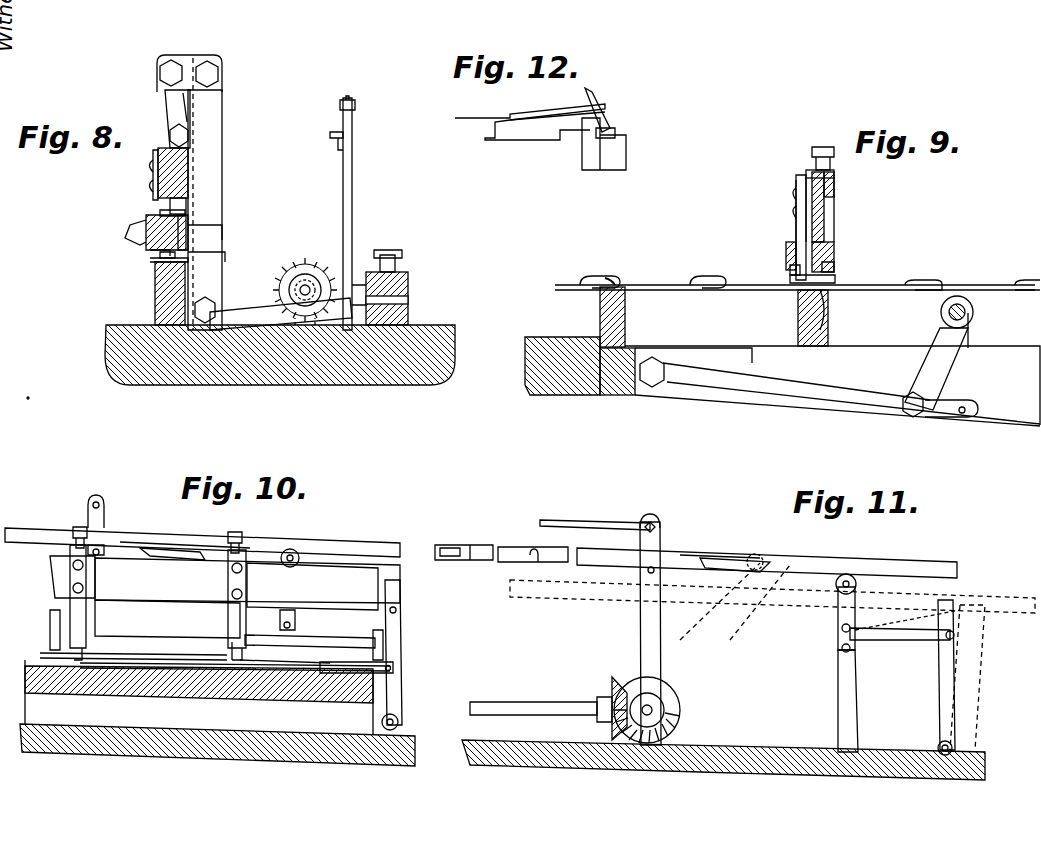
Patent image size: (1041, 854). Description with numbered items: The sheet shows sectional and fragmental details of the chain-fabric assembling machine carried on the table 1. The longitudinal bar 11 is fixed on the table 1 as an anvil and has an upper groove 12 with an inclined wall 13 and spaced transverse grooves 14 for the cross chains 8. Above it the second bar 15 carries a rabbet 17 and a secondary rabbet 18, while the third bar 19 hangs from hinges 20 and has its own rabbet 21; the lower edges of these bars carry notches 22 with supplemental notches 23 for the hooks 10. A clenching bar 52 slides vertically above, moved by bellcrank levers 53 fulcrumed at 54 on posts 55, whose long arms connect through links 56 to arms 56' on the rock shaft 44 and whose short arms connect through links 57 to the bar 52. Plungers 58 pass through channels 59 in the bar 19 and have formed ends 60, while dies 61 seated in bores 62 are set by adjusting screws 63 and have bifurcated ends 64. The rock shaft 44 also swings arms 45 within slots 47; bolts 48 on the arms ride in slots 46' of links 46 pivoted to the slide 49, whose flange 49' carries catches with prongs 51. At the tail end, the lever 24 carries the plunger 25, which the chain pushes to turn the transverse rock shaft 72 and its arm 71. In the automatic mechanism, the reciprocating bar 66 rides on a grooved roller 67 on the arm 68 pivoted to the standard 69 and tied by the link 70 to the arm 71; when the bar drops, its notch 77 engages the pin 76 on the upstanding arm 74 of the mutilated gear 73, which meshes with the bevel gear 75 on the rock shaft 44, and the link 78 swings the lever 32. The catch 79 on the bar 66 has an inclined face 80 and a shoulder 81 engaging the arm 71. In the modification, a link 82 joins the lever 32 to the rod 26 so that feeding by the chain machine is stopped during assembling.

In FIG. 8, the table 1 is at (445, 378).
In FIG. 9, the table 1 is at (600, 398).
In FIG. 10, the table 1 is at (408, 762).
In FIG. 11, the table 1 is at (528, 742).
In FIG. 9, the cross chains 8 is at (640, 282).
In FIG. 9, the hooks 10 is at (960, 262).
In FIG. 8, the longitudinal bar 11 is at (155, 300).
In FIG. 9, the longitudinal bar 11 is at (798, 320).
In FIG. 10, the longitudinal bar 11 is at (30, 707).
In FIG. 8, the longitudinal groove 12 is at (150, 260).
In FIG. 10, the longitudinal groove 12 is at (130, 675).
In FIG. 8, the inclined side wall 13 is at (160, 255).
In FIG. 9, the transverse grooves 14 is at (830, 300).
In FIG. 8, the second longitudinal bar 15 is at (186, 228).
In FIG. 9, the second longitudinal bar 15 is at (832, 252).
In FIG. 10, the second longitudinal bar 15 is at (375, 640).
In FIG. 8, the longitudinal rabbet 17 is at (195, 258).
In FIG. 10, the longitudinal rabbet 17 is at (298, 663).
In FIG. 8, the secondary longitudinal rabbet 18 is at (190, 242).
In FIG. 10, the secondary longitudinal rabbet 18 is at (260, 665).
In FIG. 8, the third bar 19 is at (150, 230).
In FIG. 9, the third bar 19 is at (790, 240).
In FIG. 8, the hinges 20 is at (162, 212).
In FIG. 8, the longitudinal rabbet 21 is at (150, 250).
In FIG. 9, the notches 22 is at (785, 282).
In FIG. 10, the notches 22 is at (238, 640).
In FIG. 10, the supplemental notches 23 is at (232, 640).
In FIG. 10, the lever 24 is at (395, 658).
In FIG. 10, the plunger 25 is at (385, 640).
In FIG. 12, the link or rod 26 is at (470, 125).
In FIG. 12, the lever 32 is at (622, 125).
In FIG. 8, the rock shaft 44 is at (305, 285).
In FIG. 9, the rock shaft 44 is at (973, 310).
In FIG. 11, the rock shaft 44 is at (500, 702).
In FIG. 9, the arms 45 is at (943, 372).
In FIG. 9, the links 46 is at (782, 399).
In FIG. 9, the slots 46' is at (957, 426).
In FIG. 9, the transverse slots 47 is at (812, 412).
In FIG. 9, the bolts 48 is at (913, 416).
In FIG. 9, the longitudinal slide 49 is at (617, 397).
In FIG. 9, the upstanding flange 49' is at (637, 317).
In FIG. 9, the prongs 51 is at (612, 278).
In FIG. 8, the horizontal bar 52 is at (190, 160).
In FIG. 9, the horizontal bar 52 is at (836, 190).
In FIG. 10, the horizontal bar 52 is at (355, 560).
In FIG. 8, the bellcrank levers 53 is at (210, 108).
In FIG. 8, the fulcrum 54 is at (216, 73).
In FIG. 8, the standards or posts 55 is at (222, 60).
In FIG. 8, the links 56 is at (281, 355).
In FIG. 8, the downwardly projecting arms 56' is at (288, 281).
In FIG. 8, the links 57 is at (170, 103).
In FIG. 8, the plungers 58 is at (155, 170).
In FIG. 9, the plungers 58 is at (790, 190).
In FIG. 10, the plungers 58 is at (268, 582).
In FIG. 9, the channels or recesses 59 is at (786, 252).
In FIG. 9, the lower ends of plungers 60 is at (790, 268).
In FIG. 8, the die 61 is at (186, 205).
In FIG. 9, the die 61 is at (822, 225).
In FIG. 9, the bore 62 is at (834, 180).
In FIG. 9, the adjusting screws 63 is at (812, 158).
In FIG. 10, the adjusting screws 63 is at (240, 532).
In FIG. 9, the bifurcated lower ends 64 is at (834, 267).
In FIG. 10, the reciprocatory longitudinal bar 66 is at (445, 548).
In FIG. 11, the reciprocatory longitudinal bar 66 is at (850, 592).
In FIG. 10, the grooved roller 67 is at (294, 552).
In FIG. 11, the grooved roller 67 is at (835, 592).
In FIG. 10, the arm 68 is at (287, 612).
In FIG. 11, the arm 68 is at (840, 635).
In FIG. 11, the standard 69 is at (838, 710).
In FIG. 10, the link 70 is at (345, 598).
In FIG. 11, the link 70 is at (930, 625).
In FIG. 10, the upstanding arm 71 is at (400, 580).
In FIG. 11, the upstanding arm 71 is at (938, 712).
In FIG. 10, the transverse rock shaft 72 is at (398, 722).
In FIG. 11, the transverse rock shaft 72 is at (952, 745).
In FIG. 8, the mutilated gear wheel 73 is at (335, 310).
In FIG. 11, the mutilated gear wheel 73 is at (670, 720).
In FIG. 8, the upstanding arm 74 is at (352, 188).
In FIG. 10, the upstanding arm 74 is at (100, 500).
In FIG. 11, the upstanding arm 74 is at (641, 635).
In FIG. 8, the bevel gear wheel 75 is at (330, 262).
In FIG. 11, the bevel gear wheel 75 is at (612, 680).
In FIG. 8, the pin 76 is at (338, 152).
In FIG. 10, the pin 76 is at (100, 548).
In FIG. 11, the pin 76 is at (649, 572).
In FIG. 11, the notch 77 is at (718, 668).
In FIG. 8, the link 78 is at (355, 104).
In FIG. 11, the link 78 is at (595, 520).
In FIG. 10, the catch 79 is at (170, 548).
In FIG. 11, the catch 79 is at (730, 558).
In FIG. 10, the inclined face 80 is at (190, 555).
In FIG. 11, the inclined face 80 is at (770, 562).
In FIG. 10, the shoulder 81 is at (160, 545).
In FIG. 11, the shoulder 81 is at (685, 550).
In FIG. 12, the link 82 is at (592, 90).